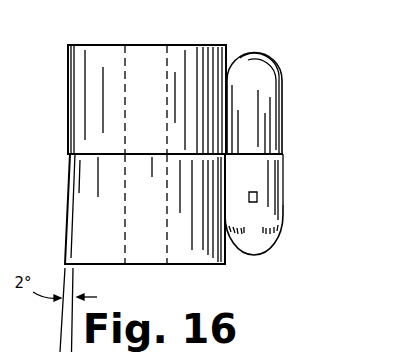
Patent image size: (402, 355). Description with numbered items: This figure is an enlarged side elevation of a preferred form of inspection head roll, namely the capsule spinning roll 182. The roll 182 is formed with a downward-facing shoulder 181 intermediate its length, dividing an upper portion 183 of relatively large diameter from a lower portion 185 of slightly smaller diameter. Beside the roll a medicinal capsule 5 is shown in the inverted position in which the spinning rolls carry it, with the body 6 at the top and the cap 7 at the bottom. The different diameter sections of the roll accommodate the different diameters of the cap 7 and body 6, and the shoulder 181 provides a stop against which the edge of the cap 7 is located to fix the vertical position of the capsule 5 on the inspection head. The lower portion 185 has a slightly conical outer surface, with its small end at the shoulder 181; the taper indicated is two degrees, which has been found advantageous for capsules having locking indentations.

The medicinal capsule 5 is at (288, 138).
The body part 6 is at (247, 65).
The cap 7 is at (283, 216).
The shoulder 181 is at (70, 157).
The capsule spinning roll 182 is at (103, 52).
The upper portion 183 is at (72, 105).
The lower portion 185 is at (88, 223).